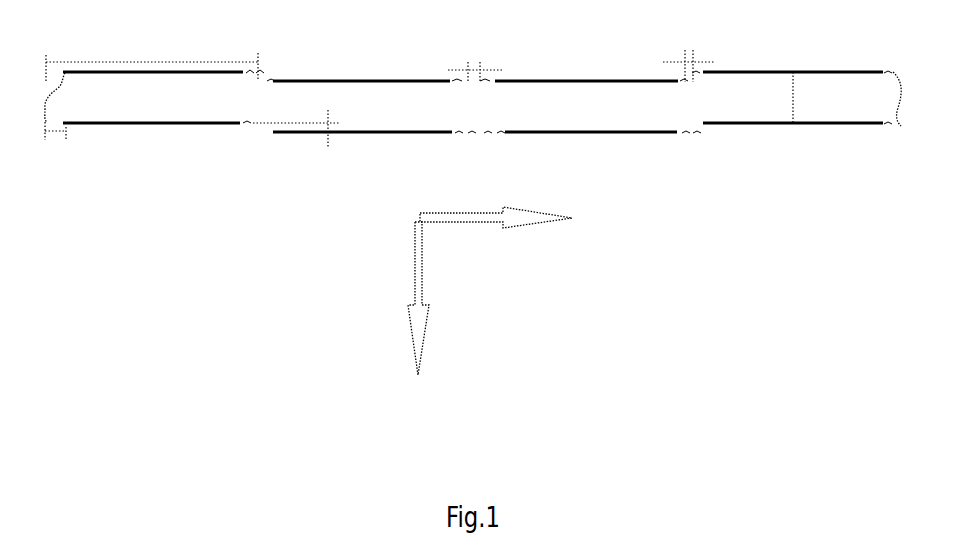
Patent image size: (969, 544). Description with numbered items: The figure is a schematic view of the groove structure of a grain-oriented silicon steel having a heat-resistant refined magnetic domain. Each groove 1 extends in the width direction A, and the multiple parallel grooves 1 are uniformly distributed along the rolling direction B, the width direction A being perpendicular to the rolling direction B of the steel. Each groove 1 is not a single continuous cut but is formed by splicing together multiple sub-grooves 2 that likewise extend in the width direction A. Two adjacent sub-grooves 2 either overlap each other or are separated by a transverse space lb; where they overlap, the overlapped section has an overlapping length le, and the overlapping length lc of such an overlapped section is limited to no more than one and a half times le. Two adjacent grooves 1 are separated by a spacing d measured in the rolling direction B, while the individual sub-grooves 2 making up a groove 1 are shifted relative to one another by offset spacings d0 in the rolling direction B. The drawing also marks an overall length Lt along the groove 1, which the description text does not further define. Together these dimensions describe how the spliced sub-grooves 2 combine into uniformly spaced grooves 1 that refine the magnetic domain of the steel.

The groove 1 is at (473, 211).
The sub-groove 2 is at (173, 123).
The width direction A is at (496, 246).
The rolling direction B is at (418, 320).
The total length dimension Lt is at (152, 49).
The overlapping length le is at (58, 148).
The offset spacing d0 is at (313, 122).
The transverse space lb is at (475, 49).
The overlapping length of the overlapped section lc is at (689, 49).
The spacing d is at (777, 97).